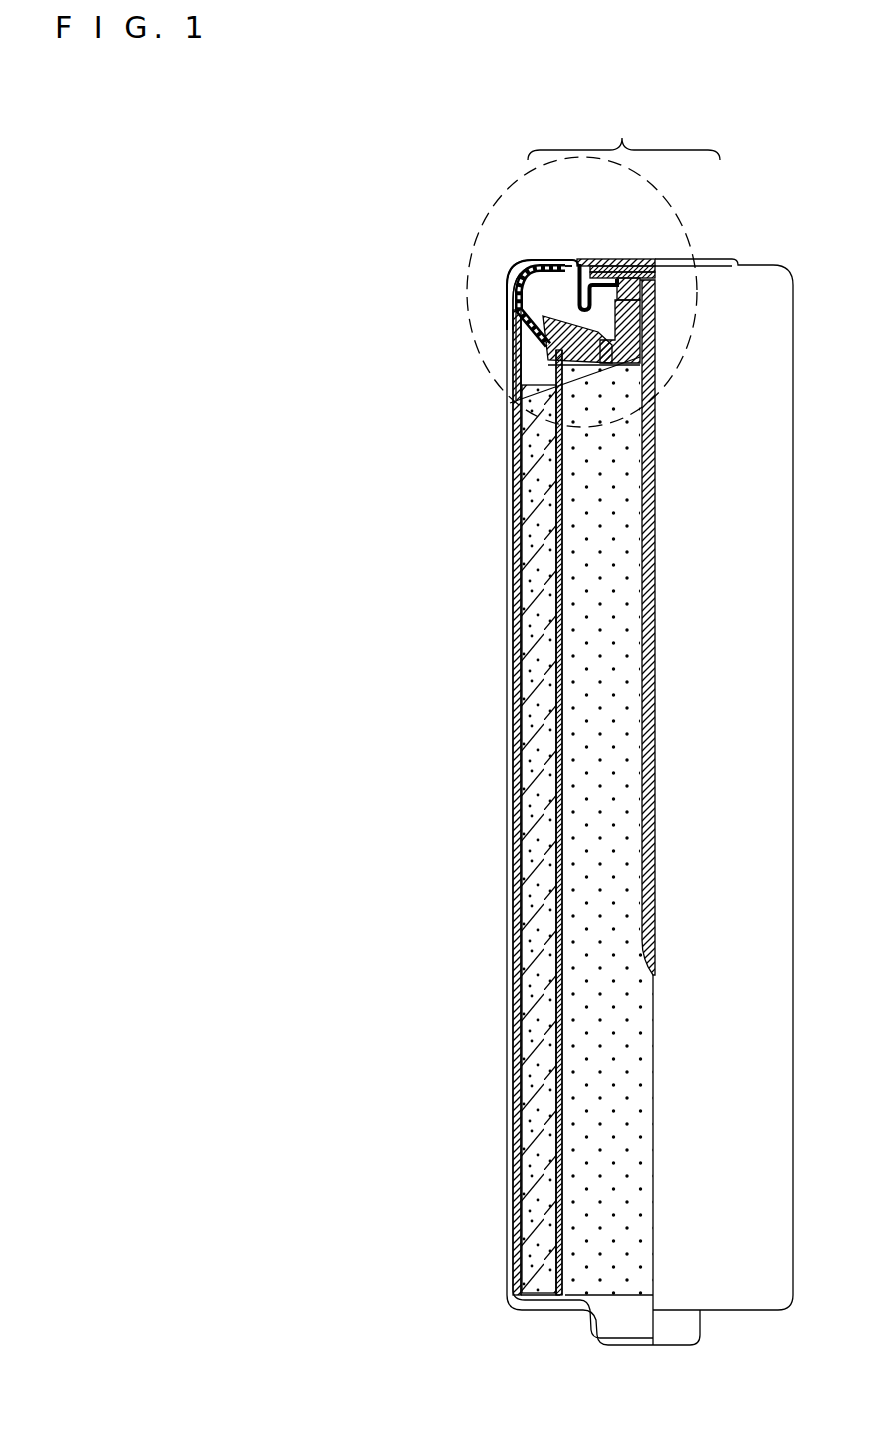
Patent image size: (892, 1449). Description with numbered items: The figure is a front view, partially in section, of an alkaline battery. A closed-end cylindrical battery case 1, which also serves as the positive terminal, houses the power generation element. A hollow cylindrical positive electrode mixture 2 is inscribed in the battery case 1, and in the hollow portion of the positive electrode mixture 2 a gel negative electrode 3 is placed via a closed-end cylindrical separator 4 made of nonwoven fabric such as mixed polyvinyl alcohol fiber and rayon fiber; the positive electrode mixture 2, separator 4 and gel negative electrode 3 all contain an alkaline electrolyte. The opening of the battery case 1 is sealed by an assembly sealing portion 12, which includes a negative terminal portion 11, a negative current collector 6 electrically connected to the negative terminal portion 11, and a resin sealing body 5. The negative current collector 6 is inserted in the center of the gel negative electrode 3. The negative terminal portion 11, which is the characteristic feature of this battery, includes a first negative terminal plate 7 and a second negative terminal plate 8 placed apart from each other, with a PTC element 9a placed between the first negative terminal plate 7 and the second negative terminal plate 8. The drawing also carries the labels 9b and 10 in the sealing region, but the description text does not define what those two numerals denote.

The battery case 1 is at (507, 828).
The positive electrode mixture 2 is at (512, 1123).
The gel negative electrode 3 is at (583, 698).
The separator 4 is at (512, 927).
The resin sealing body 5 is at (510, 403).
The negative current collector 6 is at (600, 500).
The first negative terminal plate 7 is at (593, 262).
The second negative terminal plate 8 is at (613, 262).
The PTC element 9a is at (643, 258).
The inner cap plate 9b is at (547, 265).
The case opening rim 10 is at (507, 317).
The negative terminal portion 11 is at (624, 129).
The assembly sealing portion 12 is at (515, 282).